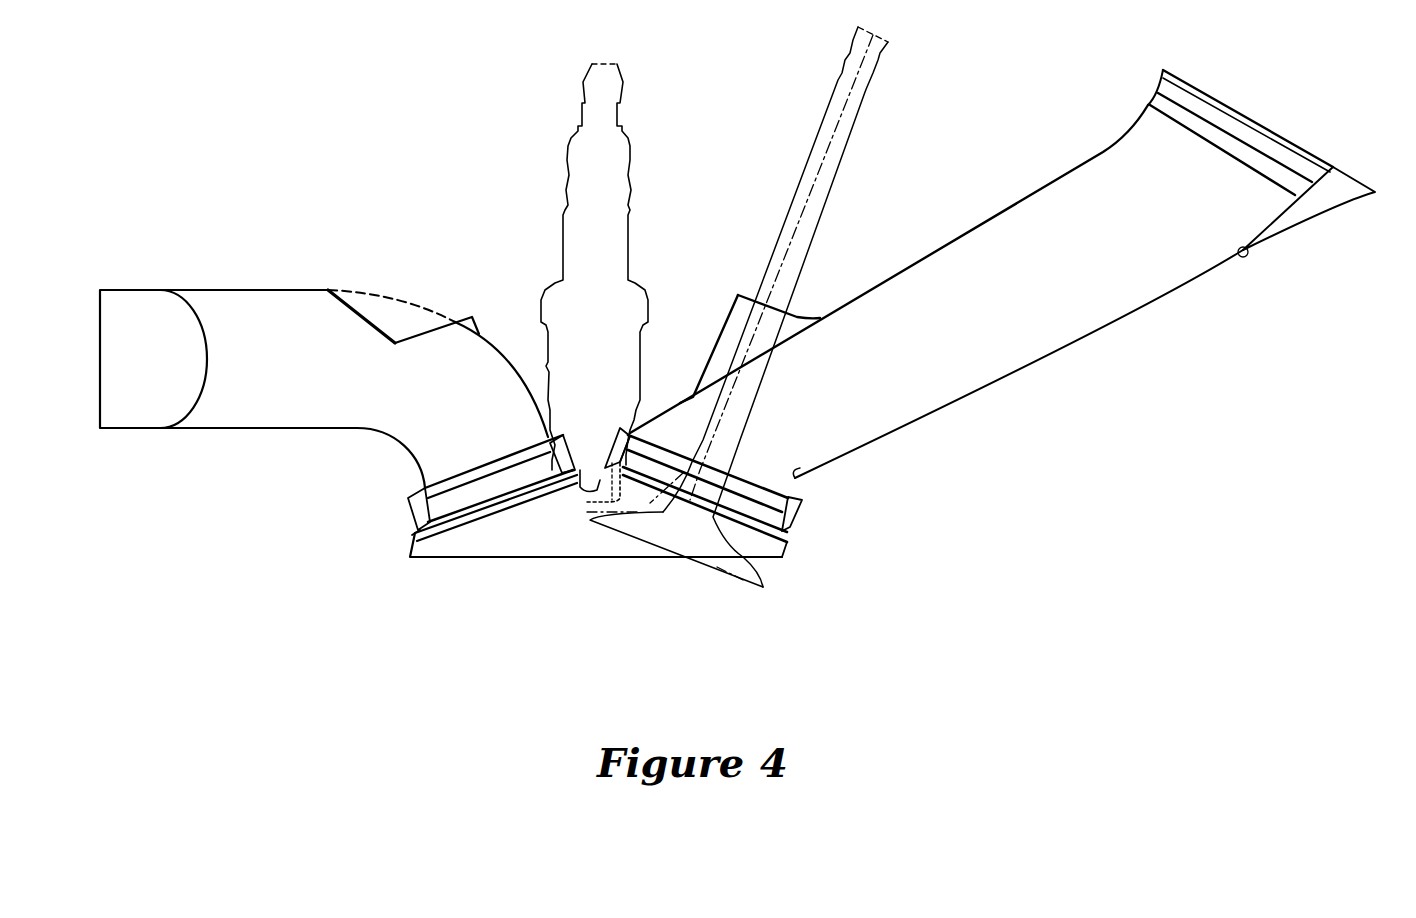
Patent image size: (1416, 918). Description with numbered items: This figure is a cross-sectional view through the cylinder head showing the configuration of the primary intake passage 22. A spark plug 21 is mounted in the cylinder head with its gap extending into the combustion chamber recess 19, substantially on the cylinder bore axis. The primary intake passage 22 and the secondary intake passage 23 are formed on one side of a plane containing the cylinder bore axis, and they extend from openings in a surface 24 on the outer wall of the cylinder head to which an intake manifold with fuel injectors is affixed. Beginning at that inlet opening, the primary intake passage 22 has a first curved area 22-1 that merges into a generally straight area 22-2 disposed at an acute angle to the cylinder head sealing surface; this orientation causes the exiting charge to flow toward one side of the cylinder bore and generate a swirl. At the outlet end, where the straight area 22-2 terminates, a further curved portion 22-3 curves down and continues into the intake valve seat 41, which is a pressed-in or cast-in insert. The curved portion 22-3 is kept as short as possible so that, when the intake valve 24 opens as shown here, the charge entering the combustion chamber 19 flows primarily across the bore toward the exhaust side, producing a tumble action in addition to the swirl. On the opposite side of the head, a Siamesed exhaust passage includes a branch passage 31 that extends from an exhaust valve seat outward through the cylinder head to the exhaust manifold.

The combustion chamber recess 19 is at (530, 543).
The spark plug 21 is at (563, 227).
The primary intake passage 22 is at (965, 309).
The first curved area 22-1 is at (1243, 255).
The generally straight area 22-2 is at (853, 302).
The curved portion 22-3 is at (813, 473).
The secondary intake passage 23 is at (1315, 208).
The intake valve 24 is at (1300, 143).
The branch passage 31 is at (262, 410).
The intake valve seat 41 is at (800, 525).